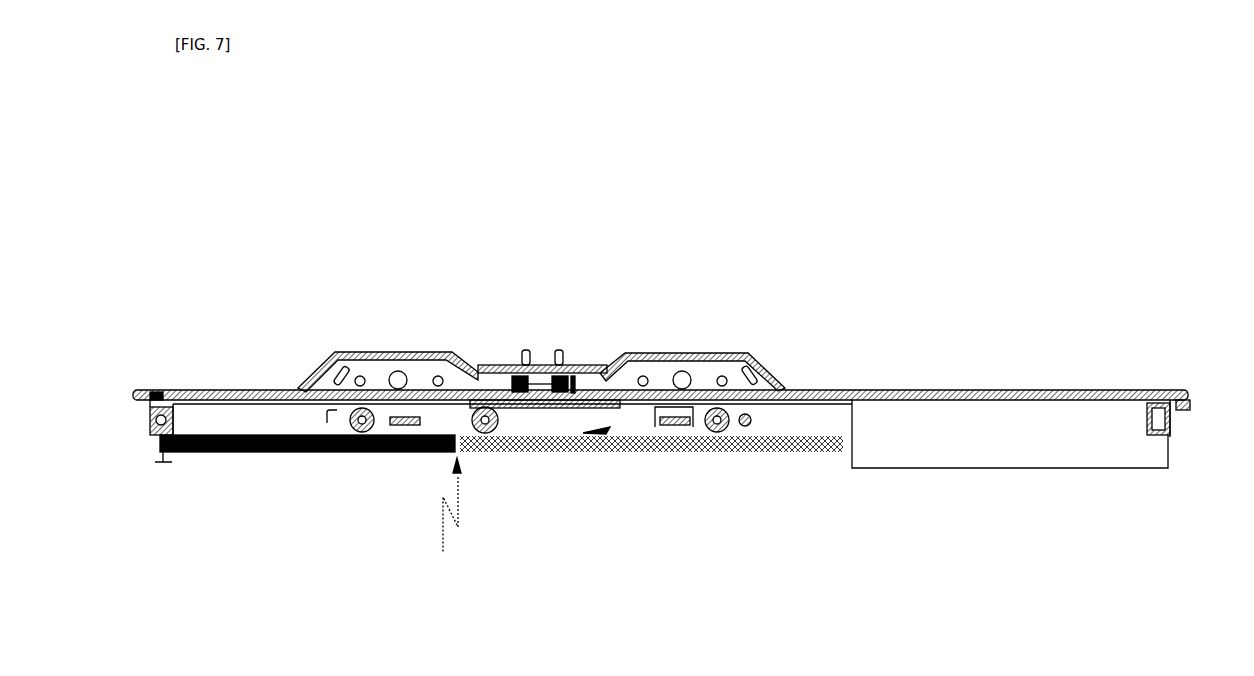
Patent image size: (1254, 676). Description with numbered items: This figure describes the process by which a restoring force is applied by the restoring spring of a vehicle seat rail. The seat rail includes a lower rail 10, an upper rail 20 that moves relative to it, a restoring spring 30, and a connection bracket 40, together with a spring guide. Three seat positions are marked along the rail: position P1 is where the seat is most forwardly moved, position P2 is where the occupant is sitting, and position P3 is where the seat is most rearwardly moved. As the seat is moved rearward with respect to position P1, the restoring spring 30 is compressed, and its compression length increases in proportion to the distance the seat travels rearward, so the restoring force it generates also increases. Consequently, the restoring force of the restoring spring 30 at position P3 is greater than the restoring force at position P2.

The lower rail 10 is at (1137, 477).
The upper rail 20 is at (688, 347).
The restoring spring 30 is at (262, 453).
The connection bracket 40 is at (443, 553).
The position P1 is at (843, 420).
The position P2 is at (537, 420).
The position P3 is at (537, 475).